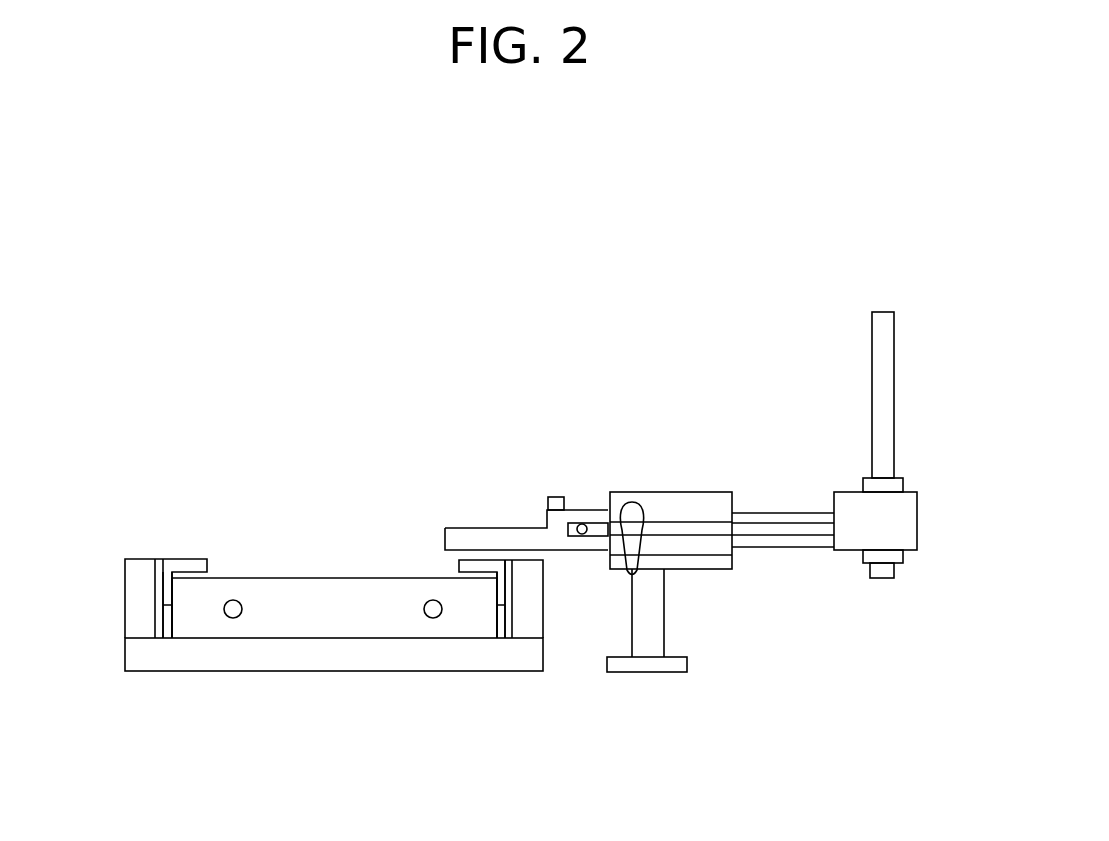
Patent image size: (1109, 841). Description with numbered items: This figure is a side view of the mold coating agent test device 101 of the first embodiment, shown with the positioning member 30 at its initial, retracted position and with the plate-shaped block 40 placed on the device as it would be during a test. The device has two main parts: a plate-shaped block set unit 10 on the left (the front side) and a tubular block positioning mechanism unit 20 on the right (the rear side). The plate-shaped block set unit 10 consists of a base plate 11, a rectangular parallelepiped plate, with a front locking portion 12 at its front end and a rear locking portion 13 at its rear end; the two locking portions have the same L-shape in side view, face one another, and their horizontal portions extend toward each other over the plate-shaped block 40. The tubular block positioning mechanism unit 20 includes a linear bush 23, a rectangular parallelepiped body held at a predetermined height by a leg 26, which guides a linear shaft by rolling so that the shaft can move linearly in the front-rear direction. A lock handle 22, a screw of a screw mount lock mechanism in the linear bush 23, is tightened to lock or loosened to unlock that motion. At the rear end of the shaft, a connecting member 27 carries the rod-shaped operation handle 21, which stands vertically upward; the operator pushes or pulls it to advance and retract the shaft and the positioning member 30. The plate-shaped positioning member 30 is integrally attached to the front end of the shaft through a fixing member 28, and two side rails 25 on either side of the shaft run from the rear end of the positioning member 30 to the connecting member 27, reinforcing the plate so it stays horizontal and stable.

The plate-shaped block set unit 10 is at (110, 674).
The base plate 11 is at (199, 652).
The front locking portion 12 is at (70, 458).
The rear locking portion 13 is at (587, 736).
The tubular block positioning mechanism unit 20 is at (819, 566).
The operation handle 21 is at (880, 327).
The lock handle 22 is at (632, 512).
The linear bush 23 is at (690, 505).
The side rail 25 is at (708, 528).
The leg 26 is at (652, 622).
The connecting member 27 is at (905, 521).
The fixing member 28 is at (575, 511).
The positioning member 30 is at (513, 540).
The plate-shaped block 40 is at (324, 620).
The mold coating agent test device 101 is at (710, 285).